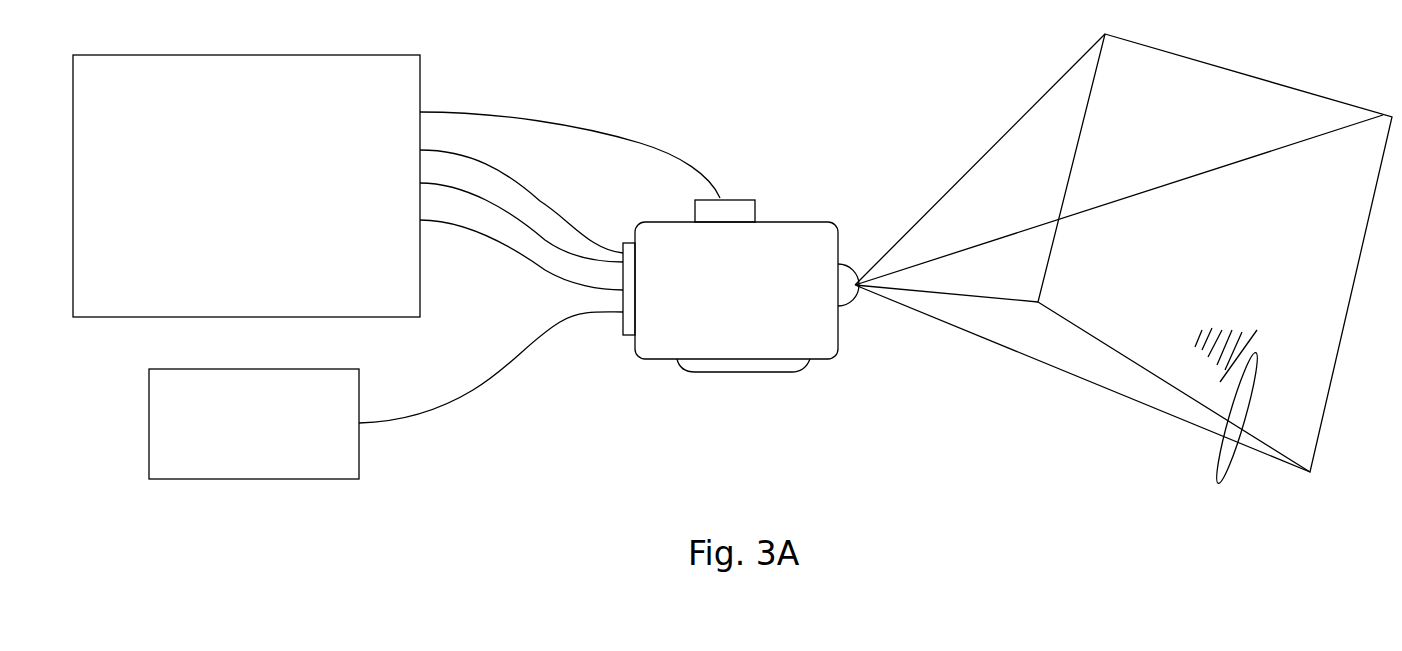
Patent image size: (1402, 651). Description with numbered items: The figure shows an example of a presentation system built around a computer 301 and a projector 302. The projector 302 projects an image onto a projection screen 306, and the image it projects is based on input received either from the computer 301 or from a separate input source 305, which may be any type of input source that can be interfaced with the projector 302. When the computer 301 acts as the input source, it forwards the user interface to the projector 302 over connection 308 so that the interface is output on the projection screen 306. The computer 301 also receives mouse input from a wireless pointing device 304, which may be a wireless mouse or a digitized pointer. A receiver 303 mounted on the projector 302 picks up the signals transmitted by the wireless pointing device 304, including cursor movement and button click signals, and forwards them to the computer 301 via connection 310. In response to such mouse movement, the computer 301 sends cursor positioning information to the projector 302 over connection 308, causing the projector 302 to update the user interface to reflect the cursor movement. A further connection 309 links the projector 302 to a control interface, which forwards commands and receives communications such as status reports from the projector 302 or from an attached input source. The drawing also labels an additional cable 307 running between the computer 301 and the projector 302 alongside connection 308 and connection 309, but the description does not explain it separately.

The computer 301 is at (427, 63).
The projector 302 is at (672, 363).
The receiver 303 is at (740, 198).
The wireless pointing device 304 is at (1218, 483).
The input source 305 is at (366, 398).
The projection screen 306 is at (1278, 83).
The audio cable 307 is at (495, 201).
The connection 308 is at (583, 230).
The connection 309 is at (513, 259).
The connection 310 is at (592, 126).